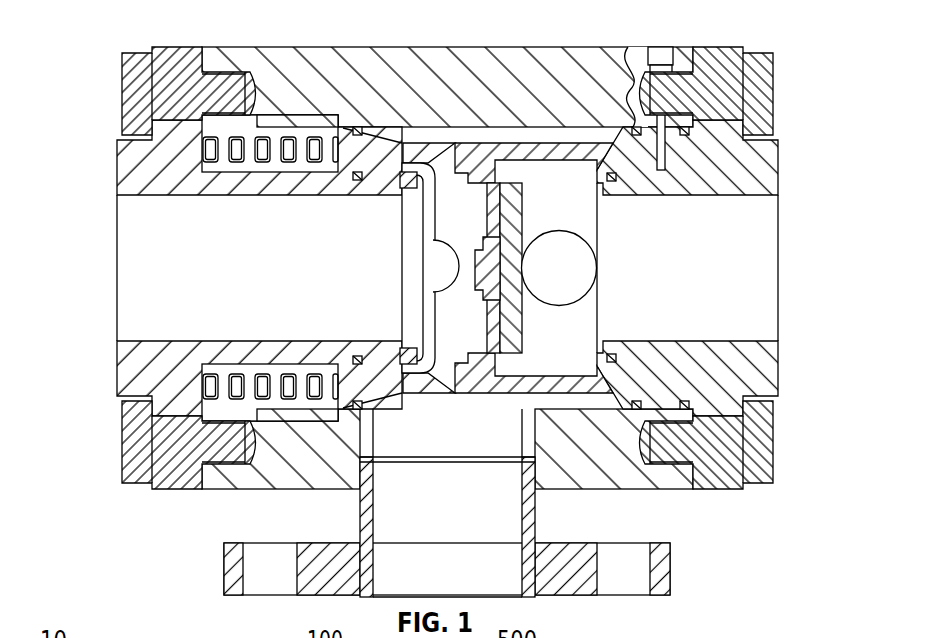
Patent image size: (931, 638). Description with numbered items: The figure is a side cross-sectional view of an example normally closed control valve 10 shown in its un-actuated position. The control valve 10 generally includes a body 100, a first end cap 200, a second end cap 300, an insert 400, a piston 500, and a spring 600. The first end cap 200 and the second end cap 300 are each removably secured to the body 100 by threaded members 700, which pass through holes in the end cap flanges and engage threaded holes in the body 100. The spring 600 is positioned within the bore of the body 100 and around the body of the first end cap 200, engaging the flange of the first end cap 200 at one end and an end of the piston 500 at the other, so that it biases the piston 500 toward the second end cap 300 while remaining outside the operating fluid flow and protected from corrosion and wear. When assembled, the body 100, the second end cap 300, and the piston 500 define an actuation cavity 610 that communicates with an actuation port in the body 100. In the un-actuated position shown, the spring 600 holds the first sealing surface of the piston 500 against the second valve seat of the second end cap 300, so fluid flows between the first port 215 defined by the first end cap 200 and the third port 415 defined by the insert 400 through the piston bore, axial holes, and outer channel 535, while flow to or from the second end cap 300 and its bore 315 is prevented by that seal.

The control valve 10 is at (447, 302).
The body 100 is at (378, 46).
The first end cap 200 is at (244, 268).
The first port 215 is at (288, 276).
The second end cap 300 is at (729, 268).
The second flow bore 315 is at (707, 276).
The insert 400 is at (567, 543).
The third port 415 is at (467, 539).
The piston 500 is at (567, 140).
The outer channel 535 is at (500, 135).
The spring 600 is at (233, 150).
The actuation cavity 610 is at (660, 162).
The threaded members 700 is at (127, 97).